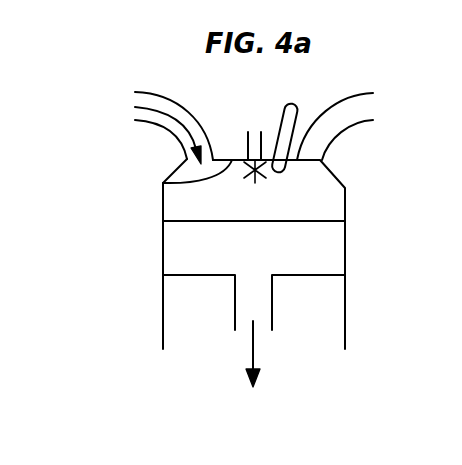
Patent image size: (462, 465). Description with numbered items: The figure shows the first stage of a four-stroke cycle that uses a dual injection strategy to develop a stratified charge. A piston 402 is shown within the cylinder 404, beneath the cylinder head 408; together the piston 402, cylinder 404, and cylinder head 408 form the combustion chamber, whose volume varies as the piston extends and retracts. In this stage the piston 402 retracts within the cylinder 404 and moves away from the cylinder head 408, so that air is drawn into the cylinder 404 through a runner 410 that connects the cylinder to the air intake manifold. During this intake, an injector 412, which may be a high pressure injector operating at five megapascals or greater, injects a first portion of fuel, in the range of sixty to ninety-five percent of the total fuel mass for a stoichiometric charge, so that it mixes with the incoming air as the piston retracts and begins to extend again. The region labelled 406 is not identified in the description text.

The piston 402 is at (185, 253).
The cylinder 404 is at (162, 216).
The combustion chamber 406 is at (297, 221).
The cylinder head 408 is at (162, 183).
The runner 410 is at (160, 92).
The injector 412 is at (243, 145).